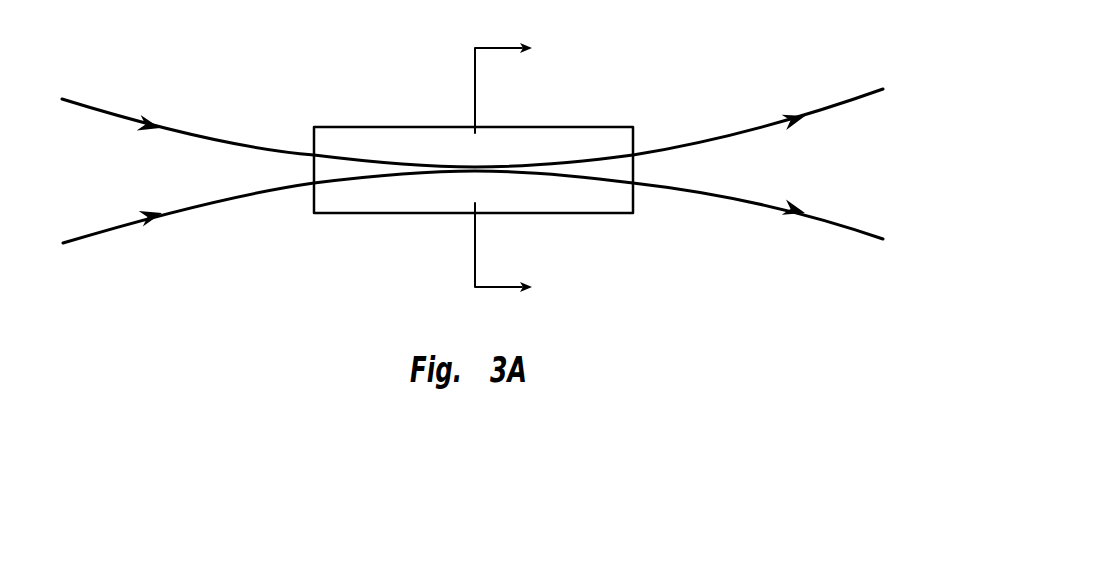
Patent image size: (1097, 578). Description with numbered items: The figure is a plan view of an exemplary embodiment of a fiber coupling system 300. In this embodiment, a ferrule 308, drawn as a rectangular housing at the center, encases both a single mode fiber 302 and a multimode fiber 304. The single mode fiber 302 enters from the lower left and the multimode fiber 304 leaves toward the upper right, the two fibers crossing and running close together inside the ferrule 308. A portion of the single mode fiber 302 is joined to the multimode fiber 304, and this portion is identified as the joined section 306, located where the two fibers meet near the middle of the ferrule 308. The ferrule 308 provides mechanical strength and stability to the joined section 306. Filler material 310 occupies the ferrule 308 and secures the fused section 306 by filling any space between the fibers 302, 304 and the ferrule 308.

The system 300 is at (503, 170).
The single mode fiber 302 is at (195, 207).
The multimode fiber 304 is at (723, 135).
The joined section 306 is at (483, 166).
The ferrule 308 is at (585, 127).
The filler material 310 is at (415, 143).